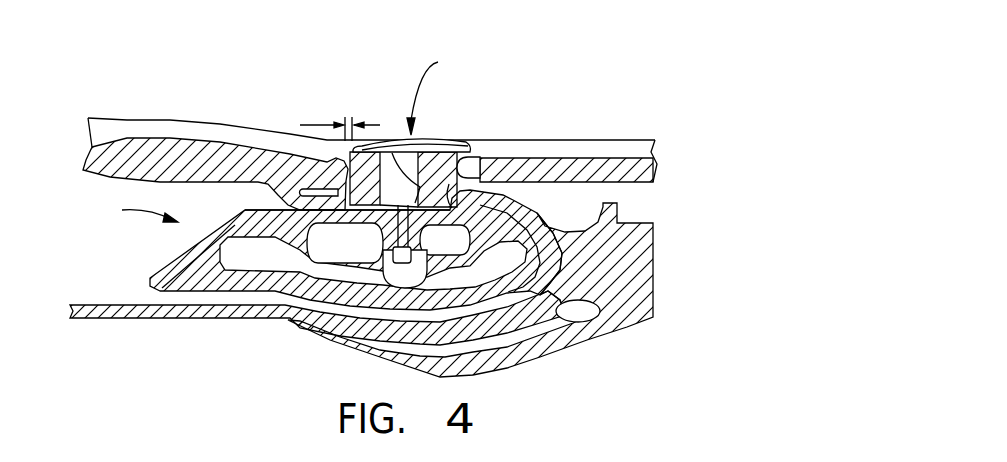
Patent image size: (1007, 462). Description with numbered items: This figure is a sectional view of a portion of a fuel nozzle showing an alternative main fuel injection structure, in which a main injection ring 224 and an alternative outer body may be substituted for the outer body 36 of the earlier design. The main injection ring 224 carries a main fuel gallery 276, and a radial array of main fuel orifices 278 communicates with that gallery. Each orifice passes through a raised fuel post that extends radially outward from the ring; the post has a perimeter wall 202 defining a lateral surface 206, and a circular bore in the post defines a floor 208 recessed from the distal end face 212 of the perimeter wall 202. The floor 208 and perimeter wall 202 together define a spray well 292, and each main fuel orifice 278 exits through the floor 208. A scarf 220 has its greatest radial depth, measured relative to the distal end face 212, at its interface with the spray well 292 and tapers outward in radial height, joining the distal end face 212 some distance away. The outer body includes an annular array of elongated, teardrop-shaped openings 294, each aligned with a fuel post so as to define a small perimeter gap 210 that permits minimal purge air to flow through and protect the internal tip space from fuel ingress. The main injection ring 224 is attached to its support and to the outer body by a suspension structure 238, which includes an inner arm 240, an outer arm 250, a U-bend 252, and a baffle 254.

The outer body 36 is at (628, 165).
The perimeter wall 202 is at (460, 143).
The lateral surface 206 is at (472, 148).
The floor 208 is at (419, 150).
The perimeter gap 210 is at (318, 122).
The distal end face 212 is at (381, 143).
The scarf 220 is at (402, 203).
The main injection ring 224 is at (457, 268).
The suspension structure 238 is at (128, 212).
The inner arm 240 is at (250, 283).
The outer arm 250 is at (258, 210).
The U-bend 252 is at (158, 277).
The baffle 254 is at (522, 203).
The main fuel gallery 276 is at (445, 240).
The main fuel orifice 278 is at (388, 230).
The spray well 292 is at (441, 90).
The opening 294 is at (477, 158).